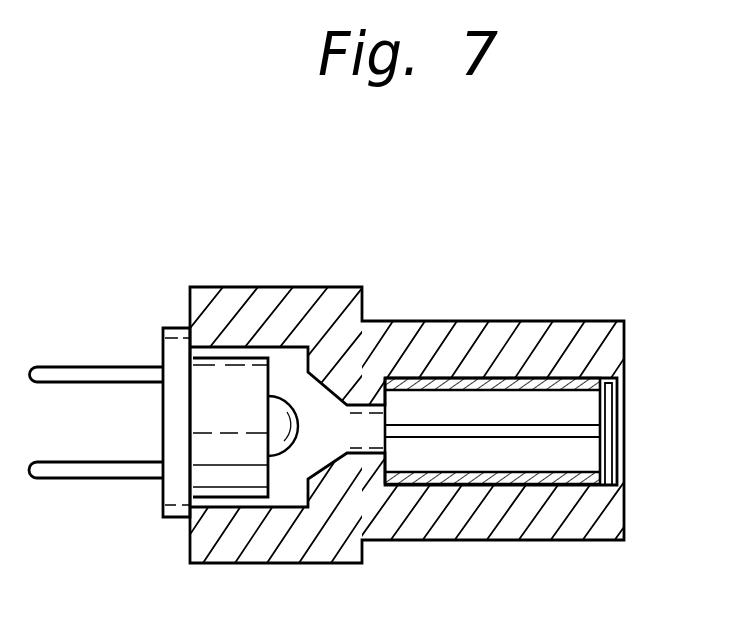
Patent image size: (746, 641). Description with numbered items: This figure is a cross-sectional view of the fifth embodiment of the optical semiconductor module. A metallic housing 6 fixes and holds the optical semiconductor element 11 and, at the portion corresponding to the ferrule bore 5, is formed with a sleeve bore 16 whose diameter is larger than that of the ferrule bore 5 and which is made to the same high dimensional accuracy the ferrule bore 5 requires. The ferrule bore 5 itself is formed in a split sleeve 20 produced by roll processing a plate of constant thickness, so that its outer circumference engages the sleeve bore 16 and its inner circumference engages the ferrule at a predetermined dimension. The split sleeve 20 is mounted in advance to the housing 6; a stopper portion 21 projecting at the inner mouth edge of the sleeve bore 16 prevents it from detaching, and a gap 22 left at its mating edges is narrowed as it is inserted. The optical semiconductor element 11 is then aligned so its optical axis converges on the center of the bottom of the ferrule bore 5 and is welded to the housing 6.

The housing 6 is at (453, 345).
The split sleeve 20 is at (513, 375).
The gap 22 is at (560, 425).
The ferrule bore 5 is at (567, 467).
The stopper portion 21 is at (617, 481).
The optical semiconductor element 11 is at (174, 472).
The sleeve bore 16 is at (488, 471).